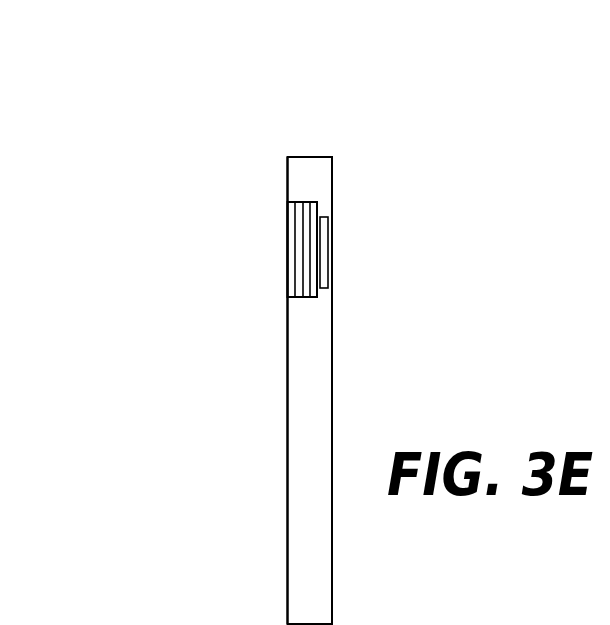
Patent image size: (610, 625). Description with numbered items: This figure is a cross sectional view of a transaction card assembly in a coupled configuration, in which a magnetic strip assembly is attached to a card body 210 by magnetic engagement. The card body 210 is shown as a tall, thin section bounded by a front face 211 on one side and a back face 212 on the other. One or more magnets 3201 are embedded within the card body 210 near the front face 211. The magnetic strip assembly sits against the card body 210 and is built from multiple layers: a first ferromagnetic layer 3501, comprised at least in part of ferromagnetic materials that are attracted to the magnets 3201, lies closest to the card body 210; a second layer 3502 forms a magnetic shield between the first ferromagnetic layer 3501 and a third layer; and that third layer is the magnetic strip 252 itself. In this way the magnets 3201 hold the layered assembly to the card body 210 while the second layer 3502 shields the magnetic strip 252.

The card body 210 is at (308, 147).
The front face 211 is at (281, 534).
The back face 212 is at (341, 578).
The magnetic strip 252 is at (281, 209).
The second layer 3502 is at (287, 247).
The first ferromagnetic layer 3501 is at (311, 305).
The magnets 3201 is at (323, 266).